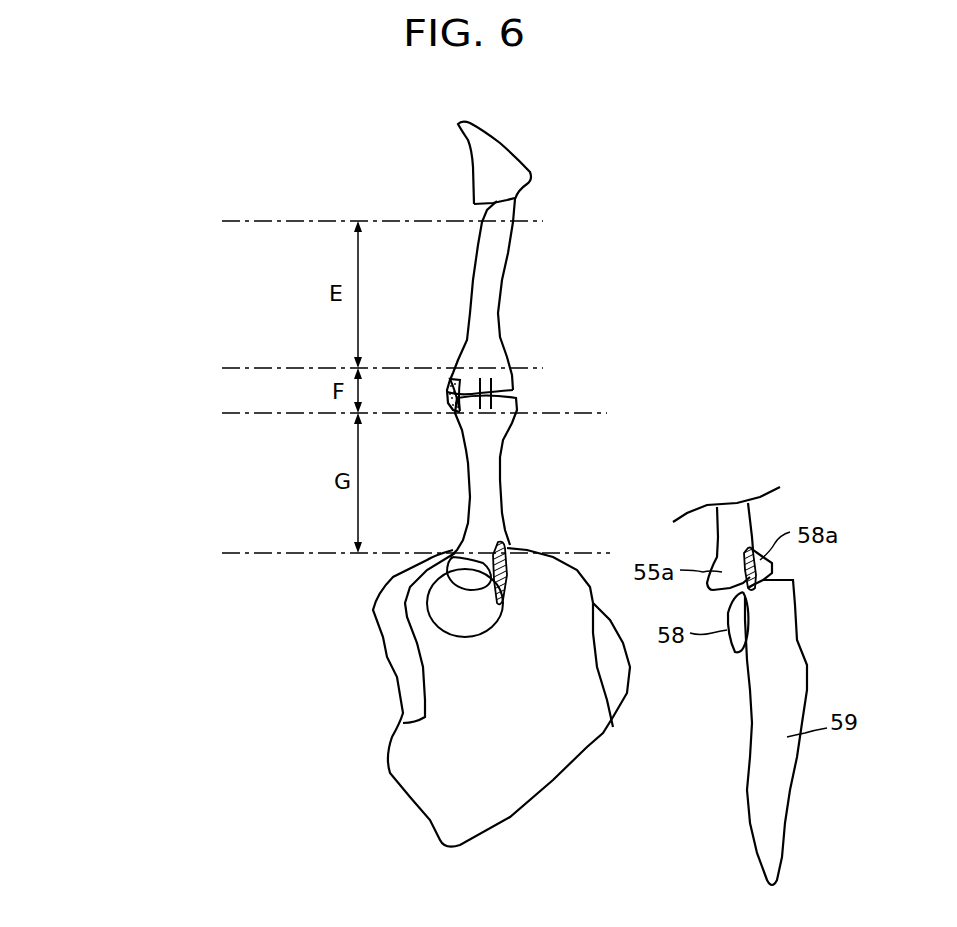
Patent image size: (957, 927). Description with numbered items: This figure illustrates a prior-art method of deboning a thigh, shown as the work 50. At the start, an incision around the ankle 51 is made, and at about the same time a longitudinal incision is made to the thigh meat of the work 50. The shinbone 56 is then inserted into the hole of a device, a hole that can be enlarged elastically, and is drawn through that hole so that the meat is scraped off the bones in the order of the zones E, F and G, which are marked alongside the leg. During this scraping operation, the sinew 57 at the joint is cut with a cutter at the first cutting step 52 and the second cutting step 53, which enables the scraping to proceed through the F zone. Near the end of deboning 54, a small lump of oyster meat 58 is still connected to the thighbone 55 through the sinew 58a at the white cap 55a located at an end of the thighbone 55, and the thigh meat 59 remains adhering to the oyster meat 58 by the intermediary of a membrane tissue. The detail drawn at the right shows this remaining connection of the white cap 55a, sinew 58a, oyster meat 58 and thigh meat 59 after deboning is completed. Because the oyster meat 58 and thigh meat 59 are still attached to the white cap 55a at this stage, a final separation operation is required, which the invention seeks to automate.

The work 50 is at (558, 207).
The incision around the ankle 51 is at (320, 238).
The first cutting step 52 is at (298, 370).
The second cutting step 53 is at (314, 417).
The end of deboning 54 is at (341, 565).
The thighbone 55 is at (486, 494).
The white cap 55a is at (458, 554).
The shinbone 56 is at (490, 290).
The sinew 57 is at (493, 391).
The oyster meat 58 is at (443, 615).
The sinew 58a is at (502, 550).
The thigh meat 59 is at (587, 727).